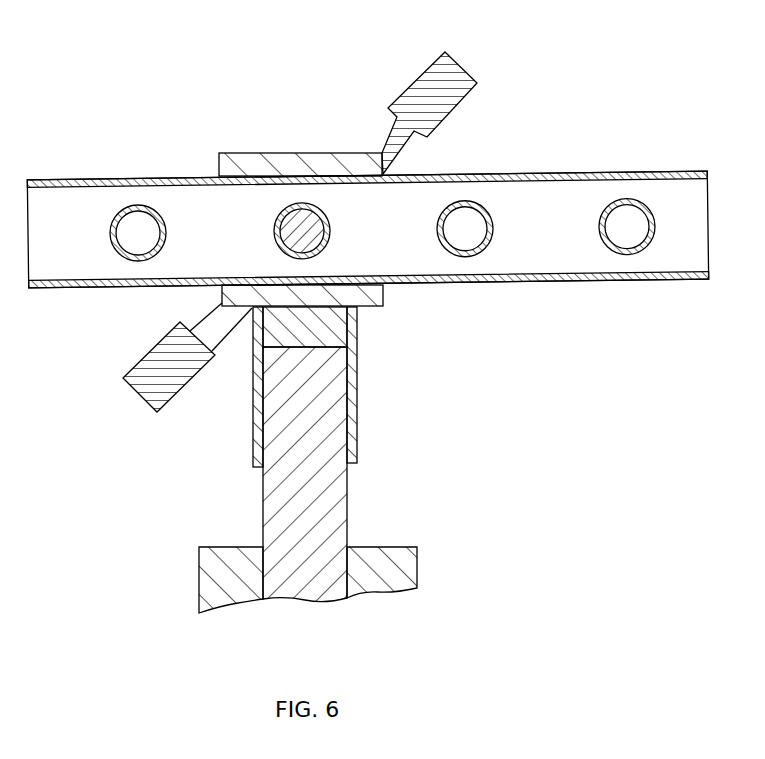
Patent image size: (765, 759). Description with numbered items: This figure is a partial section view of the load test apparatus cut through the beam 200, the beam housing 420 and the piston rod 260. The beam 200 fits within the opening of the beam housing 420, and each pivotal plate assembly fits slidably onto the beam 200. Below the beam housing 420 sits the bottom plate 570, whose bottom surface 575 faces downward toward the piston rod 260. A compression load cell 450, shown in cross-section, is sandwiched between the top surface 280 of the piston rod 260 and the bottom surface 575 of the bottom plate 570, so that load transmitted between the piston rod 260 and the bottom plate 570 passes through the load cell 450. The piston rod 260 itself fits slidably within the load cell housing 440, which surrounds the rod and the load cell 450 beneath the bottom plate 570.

The beam 200 is at (498, 172).
The beam housing 420 is at (258, 170).
The bottom plate 570 is at (385, 293).
The bottom surface of bottom plate 575 is at (373, 304).
The load cell housing 440 is at (370, 421).
The top surface of piston rod 280 is at (350, 370).
The compression load cell 450 is at (344, 339).
The piston rod 260 is at (267, 497).